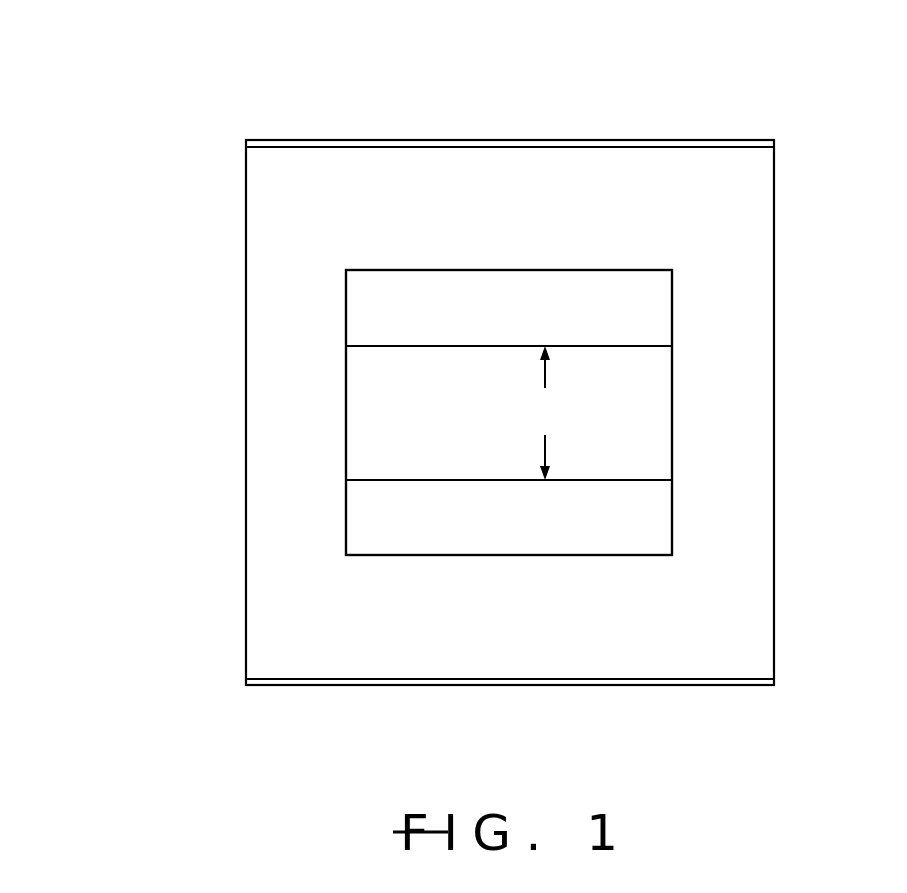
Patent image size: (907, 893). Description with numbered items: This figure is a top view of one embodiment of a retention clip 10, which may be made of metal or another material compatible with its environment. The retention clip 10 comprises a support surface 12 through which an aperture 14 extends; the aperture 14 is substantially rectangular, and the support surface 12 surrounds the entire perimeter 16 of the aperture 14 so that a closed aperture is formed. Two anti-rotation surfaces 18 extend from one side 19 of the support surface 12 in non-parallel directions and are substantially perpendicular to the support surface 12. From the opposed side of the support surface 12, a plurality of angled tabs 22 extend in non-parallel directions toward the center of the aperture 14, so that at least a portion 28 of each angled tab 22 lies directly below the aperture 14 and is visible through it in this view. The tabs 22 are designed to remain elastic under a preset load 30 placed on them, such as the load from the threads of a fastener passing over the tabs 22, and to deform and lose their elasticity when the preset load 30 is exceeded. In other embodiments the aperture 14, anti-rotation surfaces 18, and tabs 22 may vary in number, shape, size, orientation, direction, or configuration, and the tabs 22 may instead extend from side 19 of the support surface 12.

The retention clip 10 is at (497, 123).
The support surface 12 is at (740, 295).
The aperture 14 is at (643, 393).
The perimeter 16 is at (482, 270).
The anti-rotation surfaces 18 is at (678, 138).
The one side 19 is at (750, 197).
The angled tabs 22 is at (493, 334).
The portion 28 is at (388, 330).
The preset load 30 is at (545, 375).